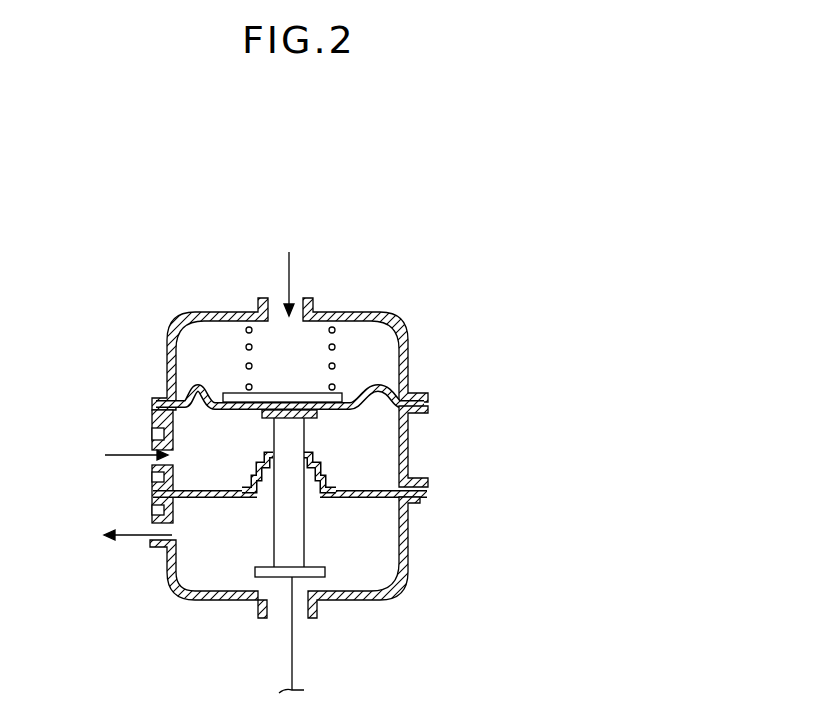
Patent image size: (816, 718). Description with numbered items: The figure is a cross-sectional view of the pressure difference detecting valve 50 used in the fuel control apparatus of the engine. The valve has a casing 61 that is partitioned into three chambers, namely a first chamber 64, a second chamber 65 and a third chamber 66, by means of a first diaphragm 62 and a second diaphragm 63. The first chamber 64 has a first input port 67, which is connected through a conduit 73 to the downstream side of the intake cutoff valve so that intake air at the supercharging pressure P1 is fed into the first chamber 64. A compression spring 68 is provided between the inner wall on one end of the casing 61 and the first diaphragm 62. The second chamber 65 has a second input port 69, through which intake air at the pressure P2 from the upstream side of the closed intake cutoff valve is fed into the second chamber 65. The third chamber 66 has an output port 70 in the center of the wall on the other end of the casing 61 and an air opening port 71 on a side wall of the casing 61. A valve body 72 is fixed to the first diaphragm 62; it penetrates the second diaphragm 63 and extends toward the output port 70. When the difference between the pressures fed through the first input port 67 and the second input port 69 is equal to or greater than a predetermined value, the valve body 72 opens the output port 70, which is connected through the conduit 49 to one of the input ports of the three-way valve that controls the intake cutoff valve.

The conduit 49 is at (292, 648).
The pressure difference detecting valve 50 is at (423, 268).
The casing 61 is at (188, 312).
The first diaphragm 62 is at (408, 427).
The second diaphragm 63 is at (375, 492).
The first chamber 64 is at (378, 353).
The second chamber 65 is at (385, 460).
The third chamber 66 is at (383, 557).
The first input port 67 is at (300, 302).
The compression spring 68 is at (245, 367).
The second input port 69 is at (150, 452).
The output port 70 is at (280, 610).
The air opening port 71 is at (148, 540).
The valve body 72 is at (323, 572).
The conduit 73 is at (290, 268).